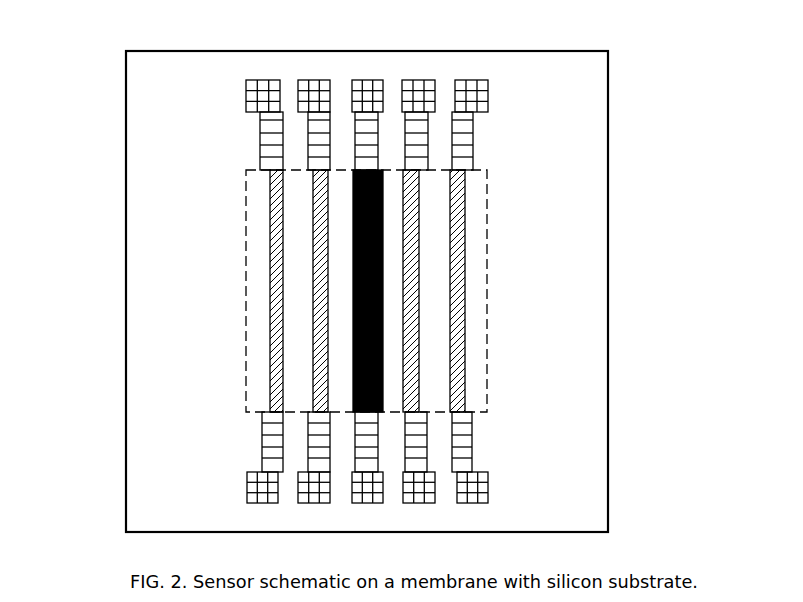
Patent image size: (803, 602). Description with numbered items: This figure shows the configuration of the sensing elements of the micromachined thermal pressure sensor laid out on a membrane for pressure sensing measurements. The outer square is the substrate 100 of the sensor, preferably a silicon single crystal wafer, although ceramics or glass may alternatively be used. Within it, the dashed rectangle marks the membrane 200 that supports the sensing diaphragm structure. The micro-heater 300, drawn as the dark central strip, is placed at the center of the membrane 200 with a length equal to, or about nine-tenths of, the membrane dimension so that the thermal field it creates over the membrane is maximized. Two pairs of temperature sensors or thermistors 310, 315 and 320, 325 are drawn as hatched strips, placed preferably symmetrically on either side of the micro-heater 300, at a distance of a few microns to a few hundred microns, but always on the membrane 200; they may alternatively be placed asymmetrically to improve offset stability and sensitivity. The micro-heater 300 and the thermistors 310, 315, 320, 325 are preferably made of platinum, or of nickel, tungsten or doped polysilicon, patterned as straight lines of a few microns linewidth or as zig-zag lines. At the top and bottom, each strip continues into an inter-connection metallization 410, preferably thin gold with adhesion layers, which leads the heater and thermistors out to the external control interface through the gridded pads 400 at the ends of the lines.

The substrate 100 is at (570, 360).
The membrane 200 is at (480, 315).
The micro-heater 300 is at (352, 292).
The temperature sensor or thermistor 310 is at (413, 207).
The temperature sensor or thermistor 315 is at (320, 377).
The temperature sensor or thermistor 320 is at (457, 260).
The temperature sensor or thermistor 325 is at (278, 213).
The contact pads 400 is at (473, 487).
The metallization 410 is at (462, 442).